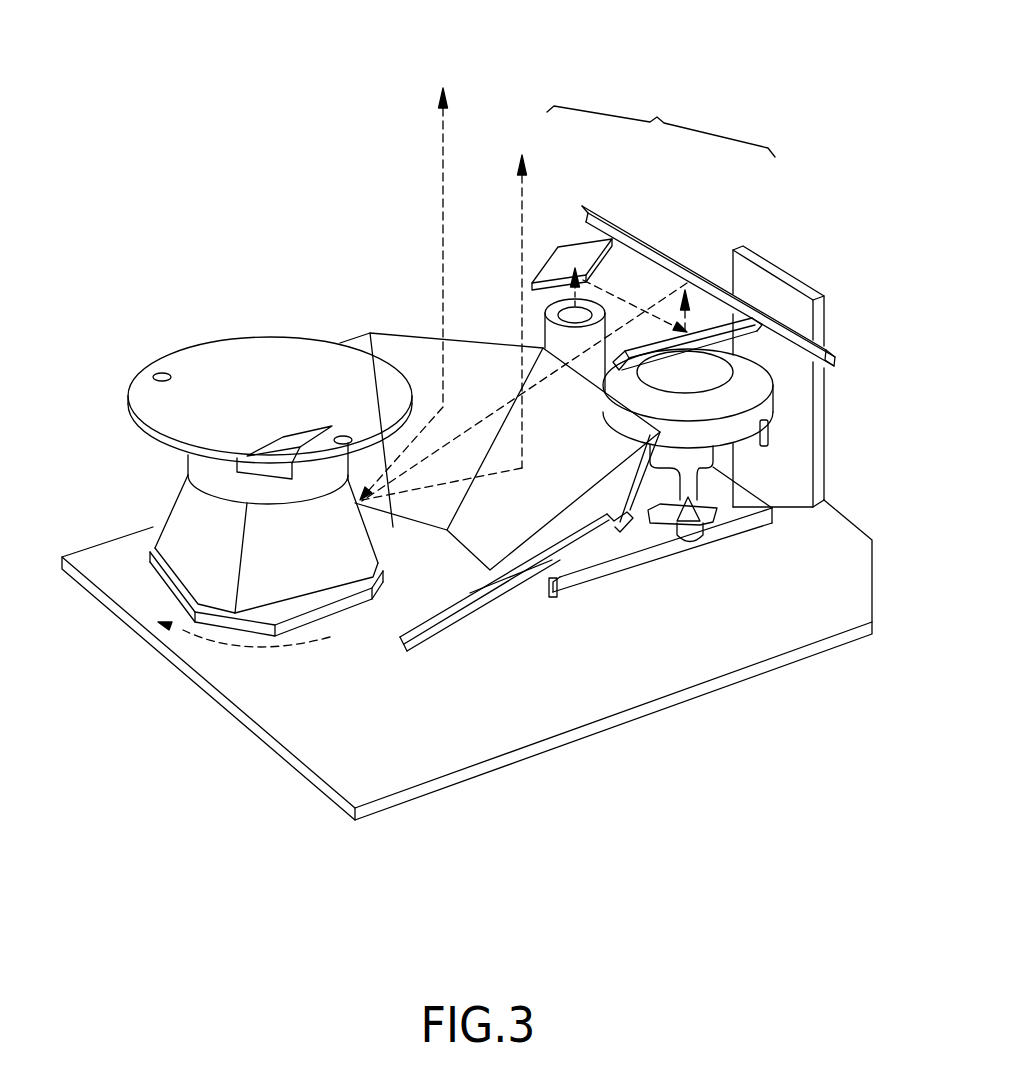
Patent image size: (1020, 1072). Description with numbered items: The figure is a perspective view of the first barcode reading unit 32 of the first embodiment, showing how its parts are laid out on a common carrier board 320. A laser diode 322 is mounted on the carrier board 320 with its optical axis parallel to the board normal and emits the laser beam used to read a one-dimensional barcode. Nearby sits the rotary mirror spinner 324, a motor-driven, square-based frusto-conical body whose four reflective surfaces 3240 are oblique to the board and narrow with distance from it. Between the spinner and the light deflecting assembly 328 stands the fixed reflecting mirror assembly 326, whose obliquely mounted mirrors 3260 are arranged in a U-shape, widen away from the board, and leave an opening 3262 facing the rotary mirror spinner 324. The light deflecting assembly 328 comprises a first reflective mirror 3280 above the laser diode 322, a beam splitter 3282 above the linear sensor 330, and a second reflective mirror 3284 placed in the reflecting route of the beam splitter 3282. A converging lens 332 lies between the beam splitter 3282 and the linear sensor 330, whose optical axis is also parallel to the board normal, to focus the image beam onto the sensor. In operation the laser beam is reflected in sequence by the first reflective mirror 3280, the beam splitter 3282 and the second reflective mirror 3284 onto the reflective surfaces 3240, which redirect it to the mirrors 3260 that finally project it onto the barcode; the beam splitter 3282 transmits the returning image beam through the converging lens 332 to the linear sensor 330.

The first barcode reading unit 32 is at (380, 22).
The carrier board 320 is at (810, 608).
The laser diode 322 is at (560, 338).
The rotary mirror spinner 324 is at (237, 561).
The reflective surface 3240 is at (277, 573).
The fixed reflecting mirror assembly 326 is at (488, 625).
The mirror 3260 is at (557, 470).
The opening 3262 is at (500, 497).
The light deflecting assembly 328 is at (683, 227).
The first reflective mirror 3280 is at (560, 248).
The beam splitter 3282 is at (705, 333).
The second reflective mirror 3284 is at (658, 257).
The linear sensor 330 is at (660, 527).
The converging lens 332 is at (740, 487).